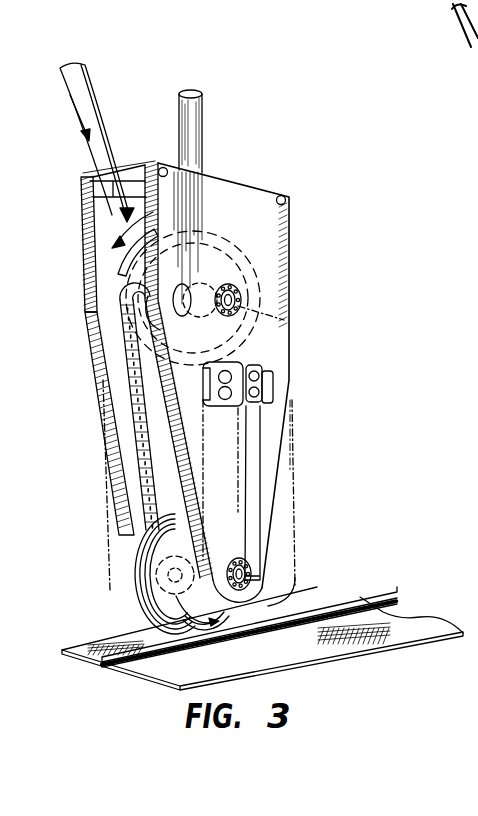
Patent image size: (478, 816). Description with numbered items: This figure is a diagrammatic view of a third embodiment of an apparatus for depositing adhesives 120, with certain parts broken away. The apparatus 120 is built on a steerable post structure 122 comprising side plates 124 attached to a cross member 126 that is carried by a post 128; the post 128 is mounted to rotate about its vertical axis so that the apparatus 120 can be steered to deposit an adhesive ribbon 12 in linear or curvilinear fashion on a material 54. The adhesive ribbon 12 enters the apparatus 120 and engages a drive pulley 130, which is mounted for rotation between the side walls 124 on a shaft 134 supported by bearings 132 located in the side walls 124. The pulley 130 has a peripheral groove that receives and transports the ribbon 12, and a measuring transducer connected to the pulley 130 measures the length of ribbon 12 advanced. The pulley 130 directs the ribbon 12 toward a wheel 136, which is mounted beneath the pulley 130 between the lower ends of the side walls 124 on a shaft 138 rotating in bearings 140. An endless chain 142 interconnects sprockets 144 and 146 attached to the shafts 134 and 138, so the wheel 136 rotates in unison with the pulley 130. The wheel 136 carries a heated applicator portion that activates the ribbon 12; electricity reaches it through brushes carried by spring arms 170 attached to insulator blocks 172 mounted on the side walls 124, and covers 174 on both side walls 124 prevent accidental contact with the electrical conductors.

The adhesive ribbon 12 is at (96, 106).
The material 54 is at (283, 667).
The apparatus for depositing adhesives 120 is at (318, 157).
The steerable post structure 122 is at (226, 166).
The side plates 124 is at (82, 215).
The cross member 126 is at (134, 172).
The post 128 is at (203, 120).
The drive pulley 130 is at (118, 250).
The bearings 132 is at (233, 292).
The shaft 134 is at (242, 299).
The wheel 136 is at (143, 626).
The shaft 138 is at (238, 590).
The bearings 140 is at (288, 600).
The endless chain 142 is at (130, 417).
The sprocket 144 is at (100, 335).
The sprocket 146 is at (167, 588).
The spring arm 170 is at (252, 494).
The insulator block 172 is at (262, 393).
The covers 174 is at (297, 552).